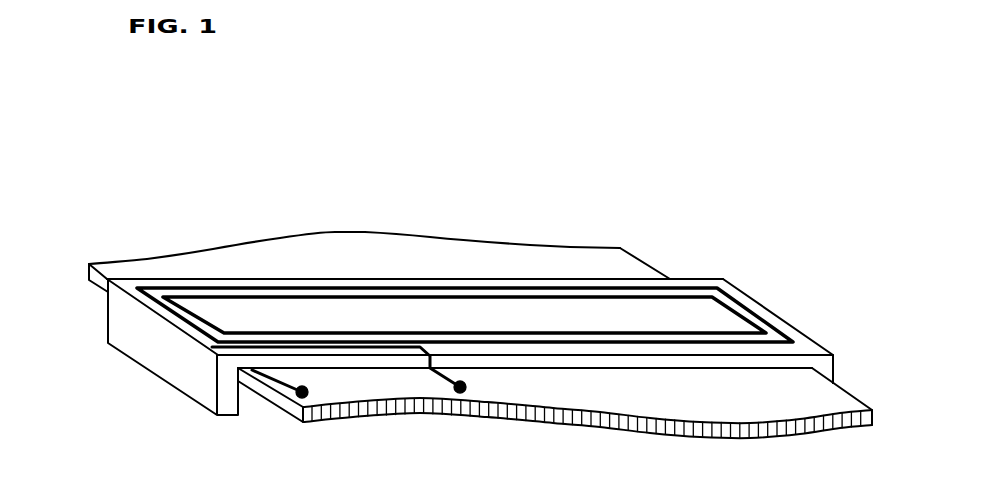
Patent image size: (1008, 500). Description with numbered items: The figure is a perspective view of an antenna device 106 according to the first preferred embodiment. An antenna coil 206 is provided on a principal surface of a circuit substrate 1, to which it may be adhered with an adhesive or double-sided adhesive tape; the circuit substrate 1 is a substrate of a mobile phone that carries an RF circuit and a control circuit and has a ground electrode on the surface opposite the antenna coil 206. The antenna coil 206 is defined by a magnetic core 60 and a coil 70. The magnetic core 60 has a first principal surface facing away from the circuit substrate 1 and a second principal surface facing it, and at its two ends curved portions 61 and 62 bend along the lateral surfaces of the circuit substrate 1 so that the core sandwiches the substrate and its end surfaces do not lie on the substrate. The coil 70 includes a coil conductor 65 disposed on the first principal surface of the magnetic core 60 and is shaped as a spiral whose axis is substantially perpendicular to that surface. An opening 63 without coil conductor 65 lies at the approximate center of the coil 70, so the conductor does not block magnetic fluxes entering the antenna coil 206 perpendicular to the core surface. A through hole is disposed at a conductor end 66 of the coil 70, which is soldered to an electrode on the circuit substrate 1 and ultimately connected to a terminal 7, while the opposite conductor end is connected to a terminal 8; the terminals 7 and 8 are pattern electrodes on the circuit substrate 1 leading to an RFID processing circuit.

The antenna device 106 is at (85, 50).
The antenna coil 206 is at (448, 325).
The circuit substrate 1 is at (490, 268).
The magnetic core 60 is at (542, 347).
The curved portion 61 is at (172, 356).
The curved portion 62 is at (836, 367).
The opening 63 is at (452, 316).
The coil conductor 65 is at (198, 288).
The conductor end 66 is at (228, 328).
The coil 70 is at (386, 280).
The terminal 7 is at (292, 400).
The terminal 8 is at (456, 393).